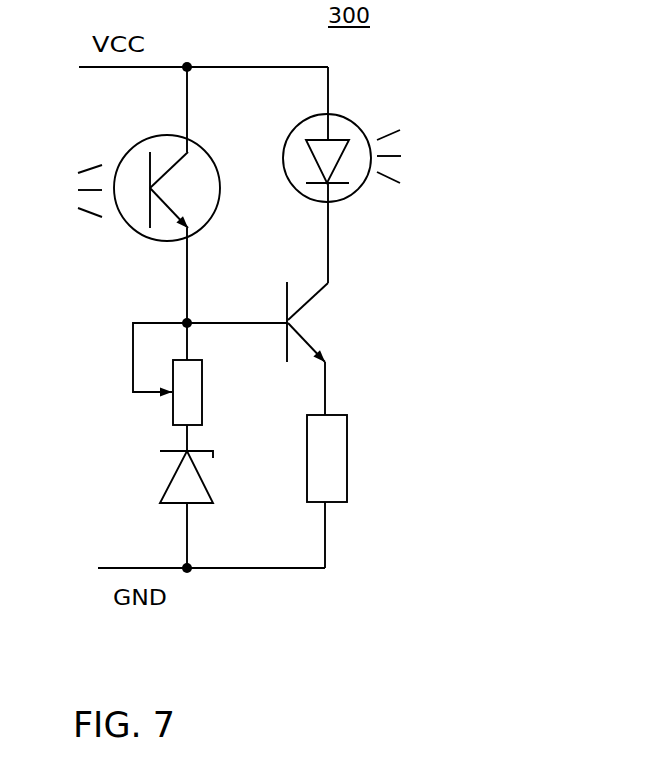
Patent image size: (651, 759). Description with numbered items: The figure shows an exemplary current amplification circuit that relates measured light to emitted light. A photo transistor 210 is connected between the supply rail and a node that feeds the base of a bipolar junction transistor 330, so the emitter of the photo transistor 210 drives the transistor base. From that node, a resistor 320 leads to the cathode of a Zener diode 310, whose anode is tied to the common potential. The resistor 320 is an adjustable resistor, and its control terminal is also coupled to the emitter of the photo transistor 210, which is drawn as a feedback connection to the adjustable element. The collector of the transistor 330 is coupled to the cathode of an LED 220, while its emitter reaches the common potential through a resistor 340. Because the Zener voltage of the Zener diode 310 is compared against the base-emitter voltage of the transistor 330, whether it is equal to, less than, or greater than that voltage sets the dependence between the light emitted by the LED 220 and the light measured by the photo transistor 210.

The photo transistor 210 is at (140, 138).
The LED 220 is at (352, 117).
The Zener diode 310 is at (177, 467).
The resistor 320 is at (203, 380).
The bipolar junction transistor 330 is at (317, 292).
The resistor 340 is at (347, 440).